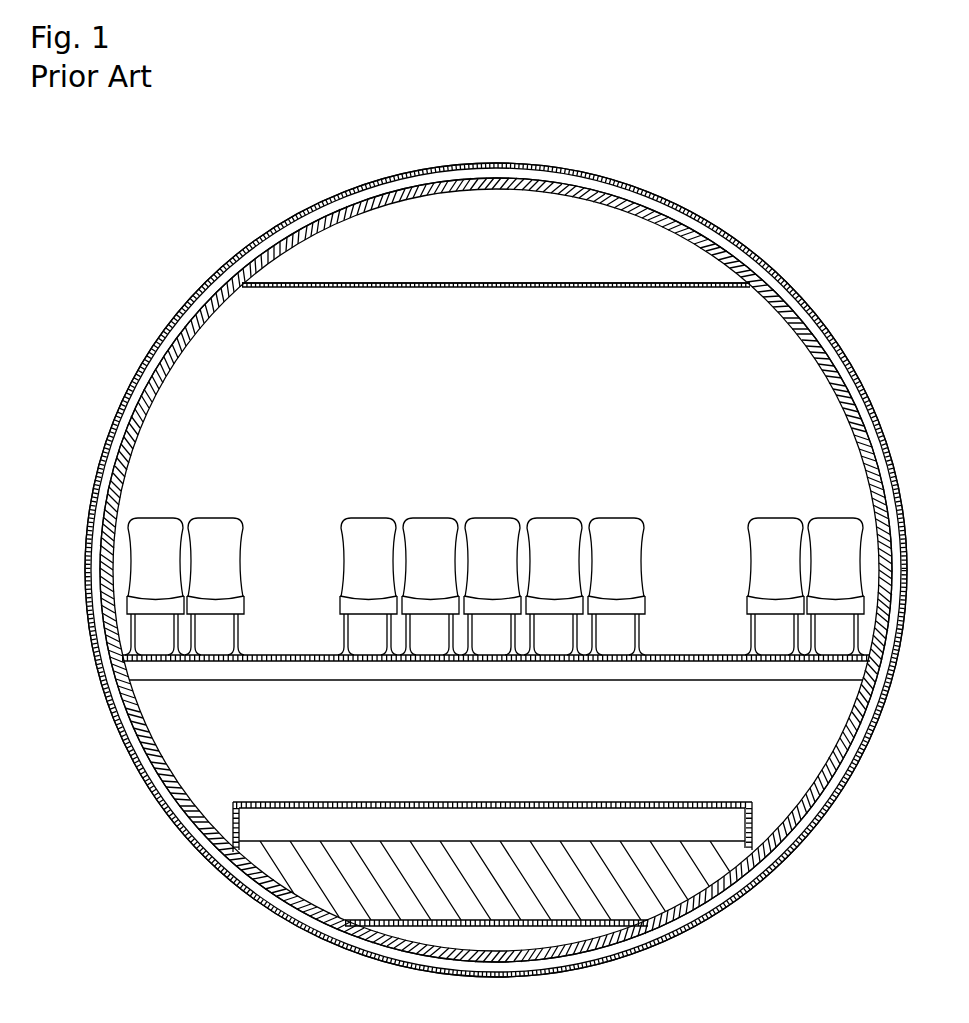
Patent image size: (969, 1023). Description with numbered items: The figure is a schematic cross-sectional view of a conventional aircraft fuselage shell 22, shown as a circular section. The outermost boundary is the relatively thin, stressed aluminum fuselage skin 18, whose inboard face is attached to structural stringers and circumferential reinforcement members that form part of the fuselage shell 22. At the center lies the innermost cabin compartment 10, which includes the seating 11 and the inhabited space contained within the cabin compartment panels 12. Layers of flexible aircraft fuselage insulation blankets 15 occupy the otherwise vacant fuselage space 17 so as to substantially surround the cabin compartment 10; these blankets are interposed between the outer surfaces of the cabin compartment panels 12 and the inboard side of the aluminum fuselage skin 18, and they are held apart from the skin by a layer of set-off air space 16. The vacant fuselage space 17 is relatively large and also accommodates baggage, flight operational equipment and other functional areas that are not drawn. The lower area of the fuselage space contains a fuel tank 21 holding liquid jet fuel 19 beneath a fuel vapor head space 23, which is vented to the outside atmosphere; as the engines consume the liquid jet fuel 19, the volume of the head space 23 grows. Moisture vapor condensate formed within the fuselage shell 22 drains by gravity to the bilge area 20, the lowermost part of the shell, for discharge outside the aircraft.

The cabin compartment 10 is at (517, 420).
The seating 11 is at (607, 525).
The cabin compartment panels 12 is at (665, 290).
The flexible aircraft fuselage insulation blankets 15 is at (690, 225).
The set-off air space 16 is at (698, 218).
The vacant fuselage space 17 is at (517, 245).
The aluminum fuselage skin 18 is at (862, 380).
The liquid jet fuel 19 is at (548, 862).
The bilge area 20 is at (482, 945).
The fuel tank 21 is at (390, 802).
The aircraft fuselage shell 22 is at (222, 290).
The fuel vapor head space 23 is at (675, 820).